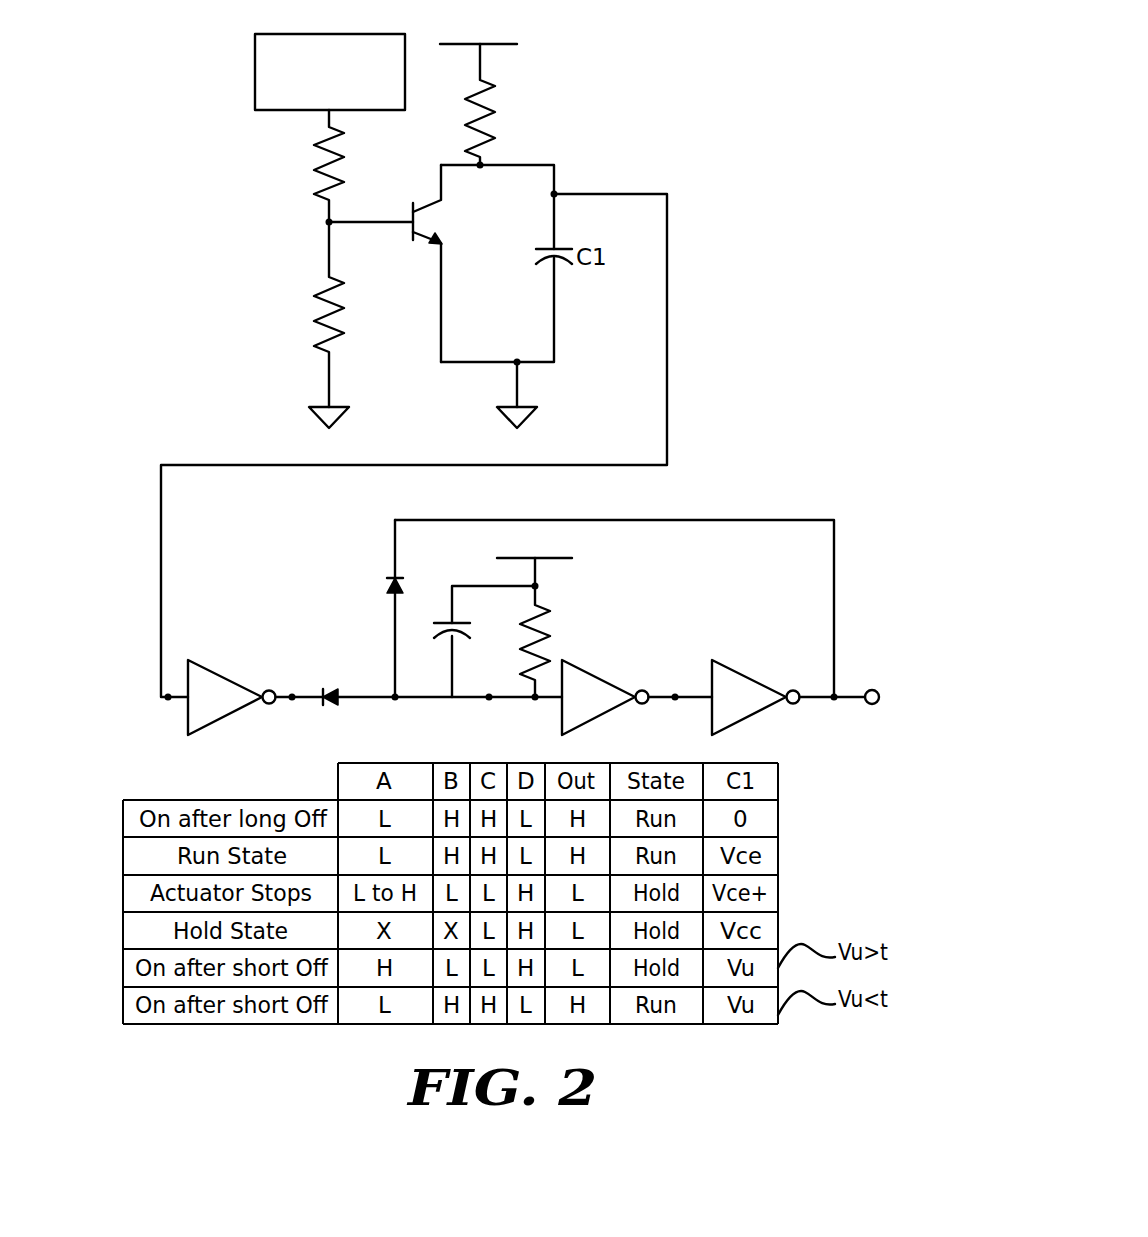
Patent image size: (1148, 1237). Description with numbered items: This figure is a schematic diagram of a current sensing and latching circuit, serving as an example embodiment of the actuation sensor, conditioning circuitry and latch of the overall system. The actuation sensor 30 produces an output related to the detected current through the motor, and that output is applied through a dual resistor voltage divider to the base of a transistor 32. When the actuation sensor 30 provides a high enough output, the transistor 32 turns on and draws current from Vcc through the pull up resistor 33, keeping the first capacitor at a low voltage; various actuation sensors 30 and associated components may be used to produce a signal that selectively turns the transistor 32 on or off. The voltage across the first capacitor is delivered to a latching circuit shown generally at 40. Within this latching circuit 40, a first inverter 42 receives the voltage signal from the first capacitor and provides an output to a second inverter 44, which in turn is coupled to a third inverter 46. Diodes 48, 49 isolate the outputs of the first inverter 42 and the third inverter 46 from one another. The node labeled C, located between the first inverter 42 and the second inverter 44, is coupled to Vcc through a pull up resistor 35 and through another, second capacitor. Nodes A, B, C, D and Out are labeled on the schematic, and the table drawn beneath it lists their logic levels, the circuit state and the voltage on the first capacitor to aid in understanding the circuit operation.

The actuation sensor 30 is at (331, 45).
The transistor 32 is at (427, 268).
The pull up resistor 33 is at (493, 110).
The pull up resistor 35 is at (546, 610).
The latching circuit 40 is at (529, 598).
The first inverter 42 is at (205, 670).
The second inverter 44 is at (580, 666).
The third inverter 46 is at (730, 666).
The diode 48 is at (331, 704).
The diode 49 is at (392, 582).